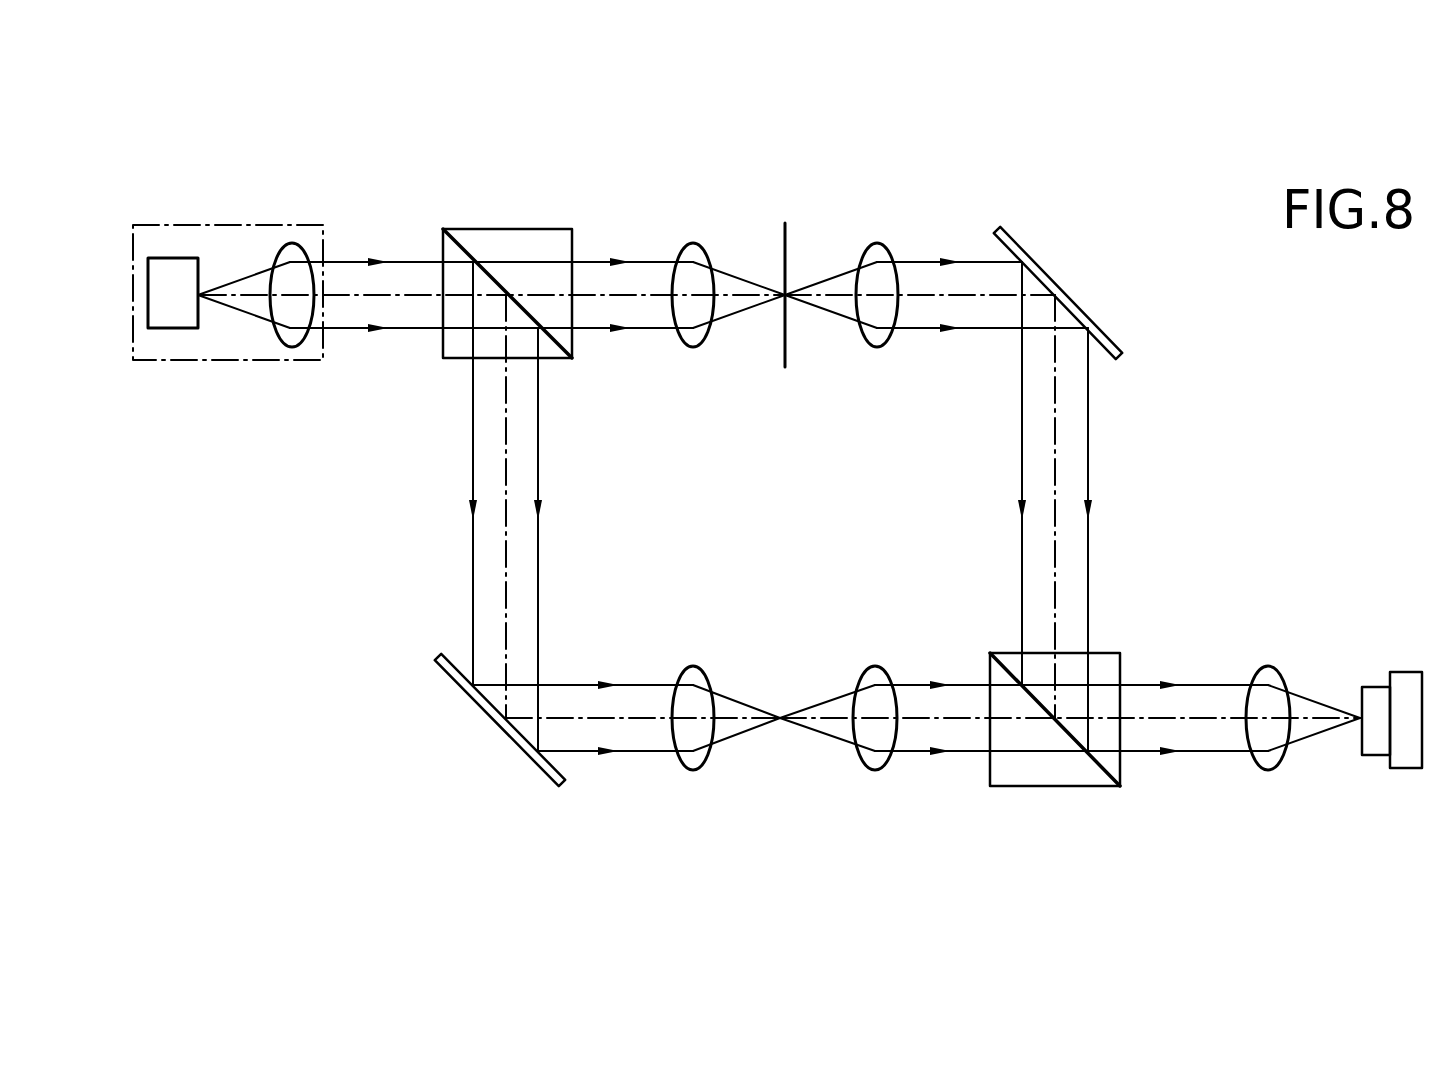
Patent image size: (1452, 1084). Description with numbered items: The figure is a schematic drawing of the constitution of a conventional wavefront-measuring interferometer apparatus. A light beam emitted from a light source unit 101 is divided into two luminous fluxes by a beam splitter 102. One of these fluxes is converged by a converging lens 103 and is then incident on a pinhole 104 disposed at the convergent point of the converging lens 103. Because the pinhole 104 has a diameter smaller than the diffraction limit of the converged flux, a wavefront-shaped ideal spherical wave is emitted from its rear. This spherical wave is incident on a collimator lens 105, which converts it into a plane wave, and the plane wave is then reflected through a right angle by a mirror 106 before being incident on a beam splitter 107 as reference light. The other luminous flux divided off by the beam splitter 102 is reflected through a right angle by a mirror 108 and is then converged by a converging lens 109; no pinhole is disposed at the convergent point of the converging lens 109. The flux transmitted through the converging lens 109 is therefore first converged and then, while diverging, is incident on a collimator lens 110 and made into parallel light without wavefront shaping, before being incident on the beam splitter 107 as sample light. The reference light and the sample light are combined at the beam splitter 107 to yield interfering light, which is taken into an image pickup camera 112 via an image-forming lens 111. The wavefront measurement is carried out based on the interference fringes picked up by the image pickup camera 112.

The light source unit 101 is at (198, 374).
The beam splitter 102 is at (532, 229).
The converging lens 103 is at (704, 212).
The pinhole 104 is at (783, 300).
The collimator lens 105 is at (870, 243).
The mirror 106 is at (1121, 342).
The beam splitter 107 is at (1100, 653).
The mirror 108 is at (540, 768).
The converging lens 109 is at (690, 768).
The collimator lens 110 is at (872, 769).
The image-forming lens 111 is at (1266, 770).
The image pickup camera 112 is at (1405, 768).